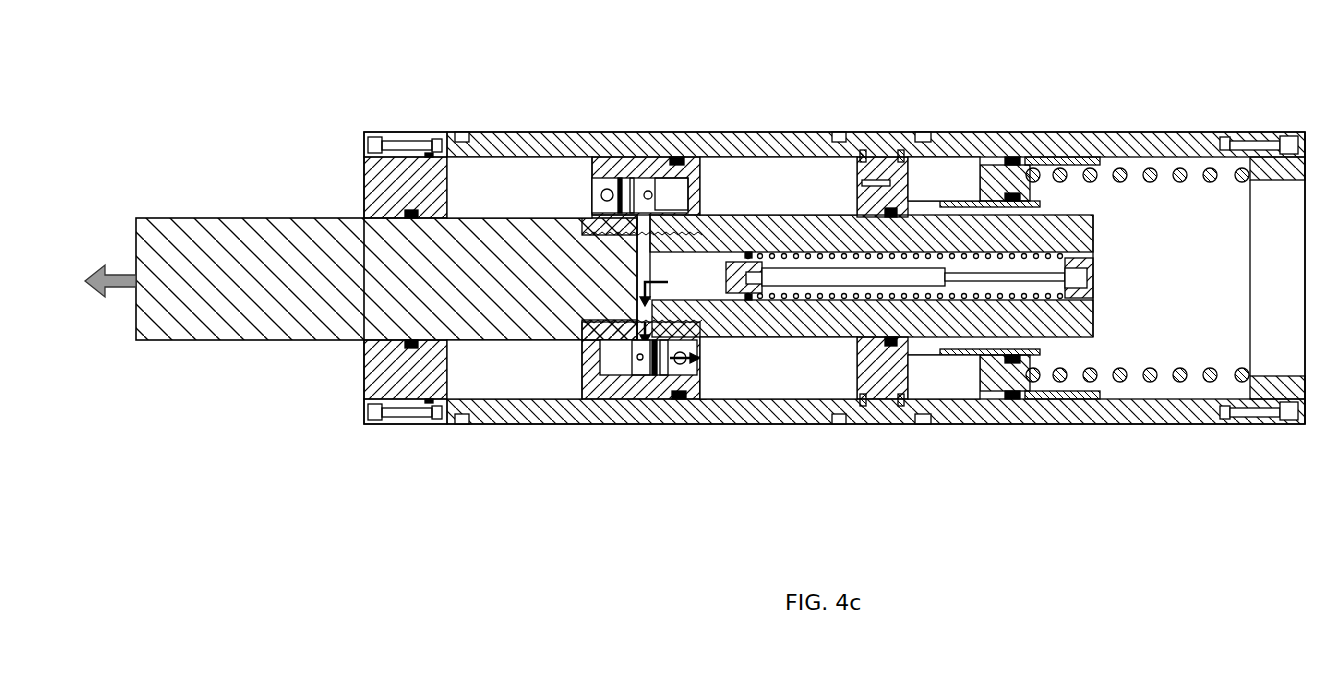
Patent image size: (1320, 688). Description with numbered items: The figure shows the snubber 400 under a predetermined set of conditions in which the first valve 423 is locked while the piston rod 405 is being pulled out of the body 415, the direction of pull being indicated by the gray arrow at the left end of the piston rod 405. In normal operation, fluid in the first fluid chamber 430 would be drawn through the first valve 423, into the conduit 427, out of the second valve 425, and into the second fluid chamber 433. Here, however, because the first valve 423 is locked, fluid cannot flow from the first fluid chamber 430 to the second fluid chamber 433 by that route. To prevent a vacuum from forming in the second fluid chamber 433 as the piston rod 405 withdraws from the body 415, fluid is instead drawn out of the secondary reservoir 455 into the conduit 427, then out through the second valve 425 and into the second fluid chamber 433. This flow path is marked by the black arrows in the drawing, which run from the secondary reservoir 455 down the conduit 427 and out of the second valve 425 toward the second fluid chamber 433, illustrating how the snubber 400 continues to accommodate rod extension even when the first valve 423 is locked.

The snubber 400 is at (296, 146).
The piston rod 405 is at (226, 341).
The first fluid chamber 430 is at (490, 188).
The first valve 423 is at (600, 200).
The secondary reservoir 455 is at (703, 272).
The body 415 is at (876, 165).
The conduit 427 is at (600, 352).
The second valve 425 is at (639, 340).
The second fluid chamber 433 is at (822, 378).